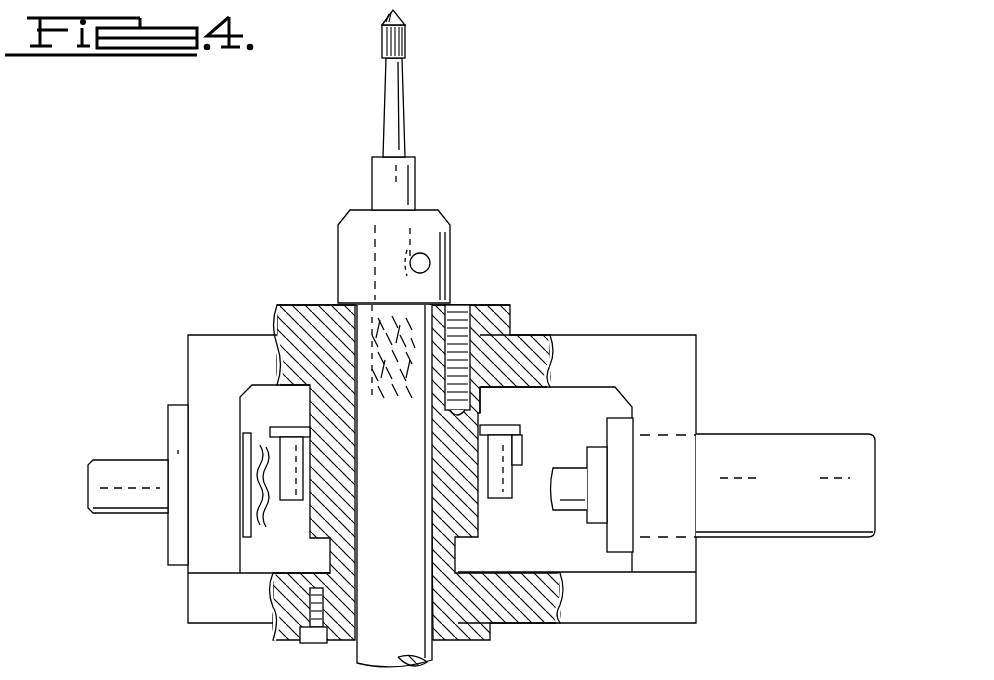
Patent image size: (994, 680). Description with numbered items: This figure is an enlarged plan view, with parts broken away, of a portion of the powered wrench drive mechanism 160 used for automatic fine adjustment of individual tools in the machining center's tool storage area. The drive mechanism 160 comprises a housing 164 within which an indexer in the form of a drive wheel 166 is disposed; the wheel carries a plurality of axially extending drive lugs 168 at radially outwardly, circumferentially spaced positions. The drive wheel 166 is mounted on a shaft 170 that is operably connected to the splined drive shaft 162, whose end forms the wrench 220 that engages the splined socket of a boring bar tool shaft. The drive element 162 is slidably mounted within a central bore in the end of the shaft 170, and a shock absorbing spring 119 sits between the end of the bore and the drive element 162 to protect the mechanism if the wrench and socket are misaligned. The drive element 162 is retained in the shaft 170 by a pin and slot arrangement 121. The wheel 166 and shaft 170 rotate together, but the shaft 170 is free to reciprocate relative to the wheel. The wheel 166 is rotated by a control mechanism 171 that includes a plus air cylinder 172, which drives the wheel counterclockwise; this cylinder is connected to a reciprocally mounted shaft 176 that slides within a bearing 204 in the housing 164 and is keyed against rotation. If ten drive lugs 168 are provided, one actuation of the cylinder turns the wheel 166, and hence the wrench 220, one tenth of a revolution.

The wrench 220 is at (398, 42).
The drive shaft 162 is at (402, 97).
The pin and slot arrangement 121 is at (421, 246).
The shock absorbing spring 119 is at (380, 333).
The drive mechanism 160 is at (524, 294).
The housing 164 is at (600, 345).
The control mechanism 171 is at (742, 423).
The plus air cylinder 172 is at (812, 503).
The shaft 170 is at (420, 538).
The drive wheel 166 is at (293, 437).
The drive lugs 168 is at (300, 502).
The bearing 204 is at (178, 428).
The reciprocally mounted shaft 176 is at (113, 472).